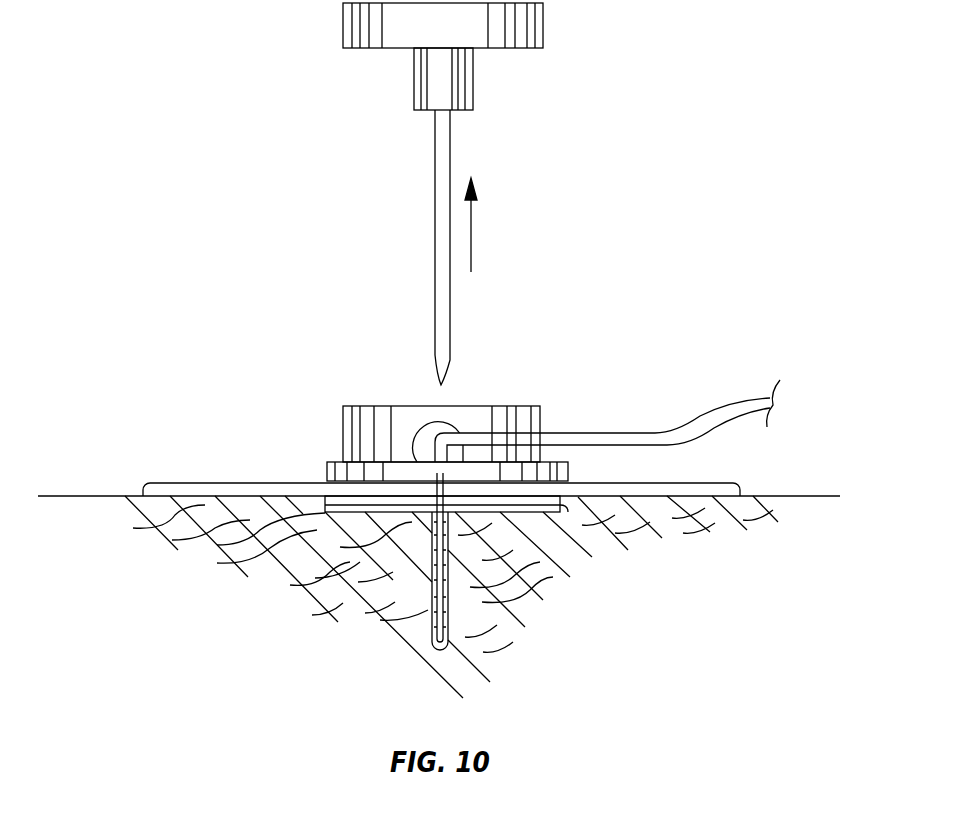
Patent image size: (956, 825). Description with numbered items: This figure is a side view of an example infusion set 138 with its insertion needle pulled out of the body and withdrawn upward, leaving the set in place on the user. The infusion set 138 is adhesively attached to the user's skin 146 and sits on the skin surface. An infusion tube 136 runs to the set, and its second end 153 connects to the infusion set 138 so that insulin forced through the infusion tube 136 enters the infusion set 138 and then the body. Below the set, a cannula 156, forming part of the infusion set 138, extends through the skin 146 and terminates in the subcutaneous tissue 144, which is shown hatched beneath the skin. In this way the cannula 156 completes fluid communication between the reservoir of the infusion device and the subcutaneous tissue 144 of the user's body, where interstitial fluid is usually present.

The infusion set 138 is at (568, 309).
The second end of infusion tube 153 is at (470, 435).
The infusion tube 136 is at (703, 418).
The skin 146 is at (87, 497).
The subcutaneous tissue 144 is at (612, 596).
The cannula 156 is at (430, 623).